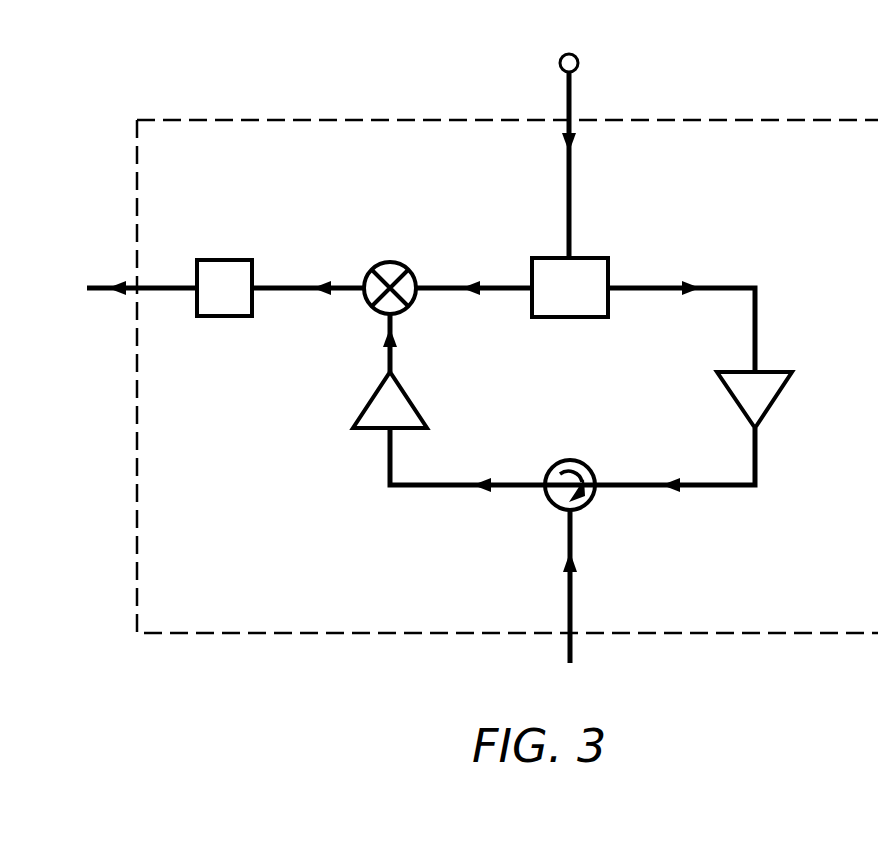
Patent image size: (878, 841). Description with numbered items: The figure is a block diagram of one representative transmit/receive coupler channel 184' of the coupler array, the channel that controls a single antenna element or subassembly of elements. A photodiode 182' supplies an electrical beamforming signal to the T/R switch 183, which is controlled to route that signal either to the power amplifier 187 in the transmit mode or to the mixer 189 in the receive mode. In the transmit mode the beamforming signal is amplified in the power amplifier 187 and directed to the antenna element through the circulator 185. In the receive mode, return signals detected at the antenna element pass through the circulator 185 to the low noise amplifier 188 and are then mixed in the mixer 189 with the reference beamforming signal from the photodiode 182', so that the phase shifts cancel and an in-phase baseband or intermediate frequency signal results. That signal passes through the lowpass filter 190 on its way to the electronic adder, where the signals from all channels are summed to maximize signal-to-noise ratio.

The photodiode 182' is at (616, 70).
The T/R switch 183 is at (608, 278).
The transmit/receive coupler channel 184' is at (461, 376).
The circulator 185 is at (590, 500).
The power amplifier 187 is at (774, 370).
The low noise amplifier 188 is at (370, 400).
The mixer 189 is at (392, 262).
The filter 190 is at (233, 260).